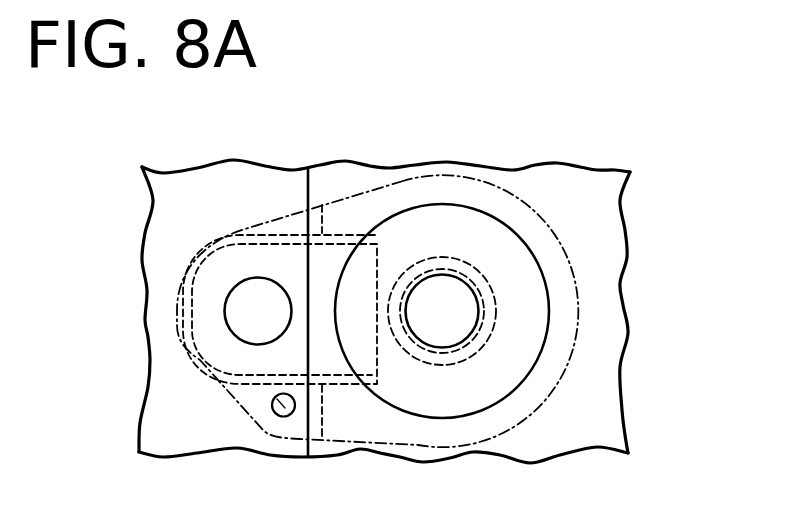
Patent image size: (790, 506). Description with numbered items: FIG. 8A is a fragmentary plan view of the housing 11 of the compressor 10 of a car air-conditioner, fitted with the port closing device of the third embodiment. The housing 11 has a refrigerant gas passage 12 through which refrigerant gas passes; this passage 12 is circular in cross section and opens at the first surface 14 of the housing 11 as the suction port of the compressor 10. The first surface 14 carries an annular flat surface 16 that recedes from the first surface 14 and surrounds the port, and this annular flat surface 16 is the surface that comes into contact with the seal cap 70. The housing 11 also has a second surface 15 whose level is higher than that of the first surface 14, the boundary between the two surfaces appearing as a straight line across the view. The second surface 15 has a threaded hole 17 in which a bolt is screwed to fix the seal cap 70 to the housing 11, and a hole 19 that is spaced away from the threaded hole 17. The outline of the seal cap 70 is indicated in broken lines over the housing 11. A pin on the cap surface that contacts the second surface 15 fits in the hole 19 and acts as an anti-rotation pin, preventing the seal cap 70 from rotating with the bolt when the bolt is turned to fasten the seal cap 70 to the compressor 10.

The compressor 10 is at (640, 193).
The housing 11 is at (272, 170).
The refrigerant gas passage 12 is at (442, 311).
The first surface 14 is at (600, 253).
The second surface 15 is at (227, 187).
The annular flat surface 16 is at (518, 343).
The threaded hole 17 is at (258, 311).
The hole 19 is at (280, 416).
The seal cap 70 is at (532, 200).